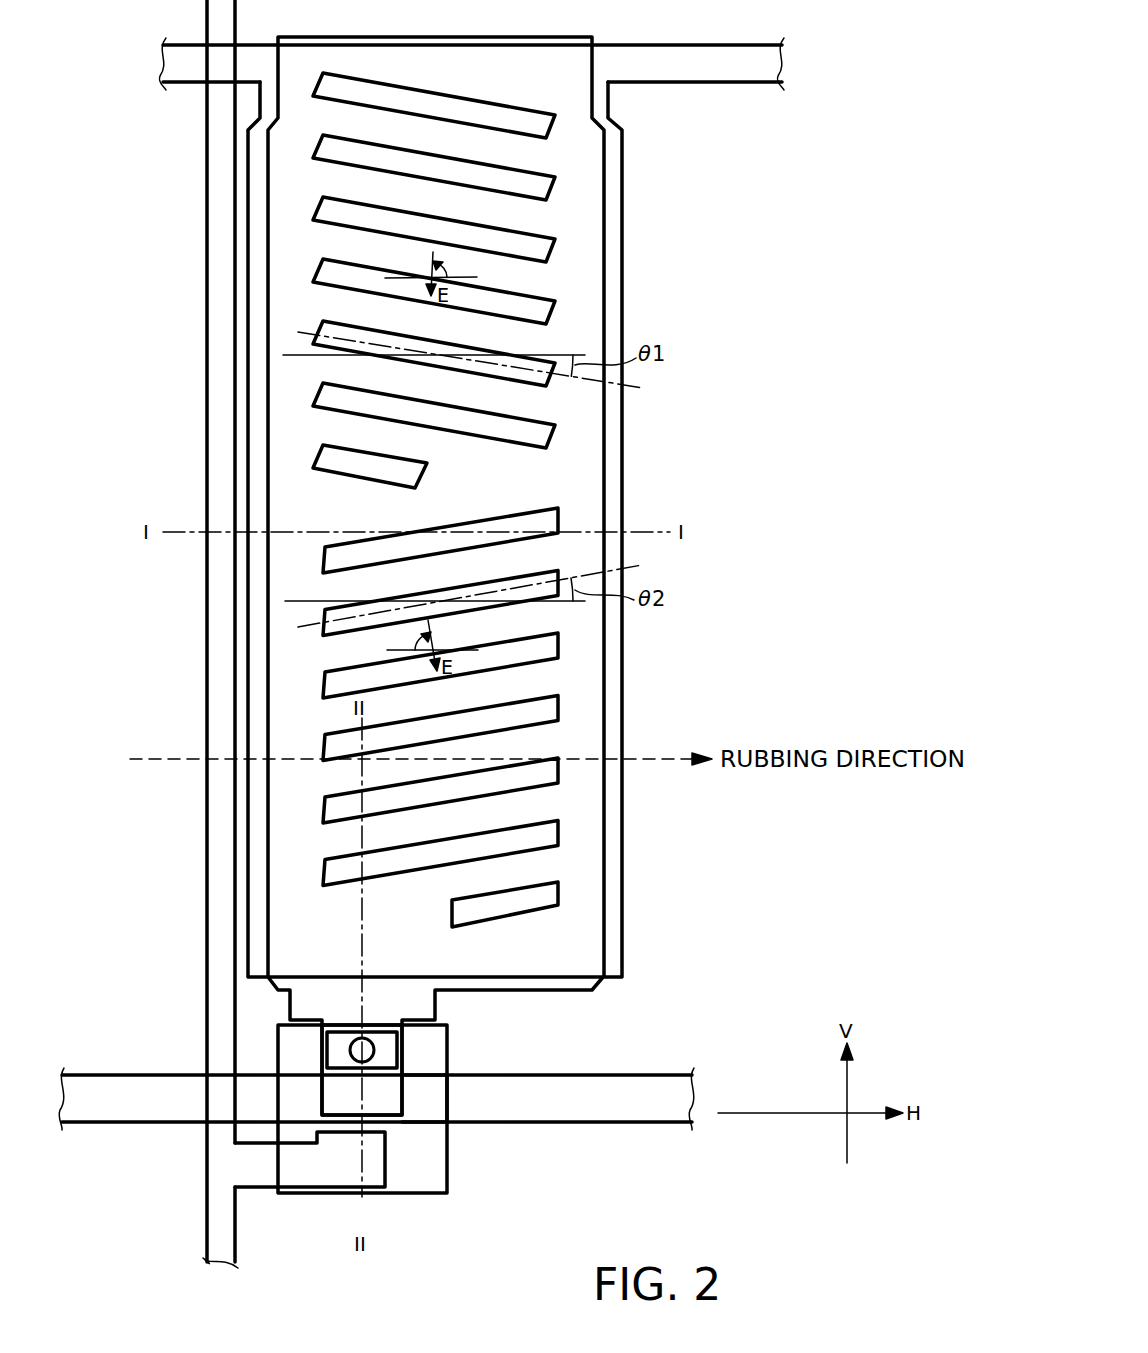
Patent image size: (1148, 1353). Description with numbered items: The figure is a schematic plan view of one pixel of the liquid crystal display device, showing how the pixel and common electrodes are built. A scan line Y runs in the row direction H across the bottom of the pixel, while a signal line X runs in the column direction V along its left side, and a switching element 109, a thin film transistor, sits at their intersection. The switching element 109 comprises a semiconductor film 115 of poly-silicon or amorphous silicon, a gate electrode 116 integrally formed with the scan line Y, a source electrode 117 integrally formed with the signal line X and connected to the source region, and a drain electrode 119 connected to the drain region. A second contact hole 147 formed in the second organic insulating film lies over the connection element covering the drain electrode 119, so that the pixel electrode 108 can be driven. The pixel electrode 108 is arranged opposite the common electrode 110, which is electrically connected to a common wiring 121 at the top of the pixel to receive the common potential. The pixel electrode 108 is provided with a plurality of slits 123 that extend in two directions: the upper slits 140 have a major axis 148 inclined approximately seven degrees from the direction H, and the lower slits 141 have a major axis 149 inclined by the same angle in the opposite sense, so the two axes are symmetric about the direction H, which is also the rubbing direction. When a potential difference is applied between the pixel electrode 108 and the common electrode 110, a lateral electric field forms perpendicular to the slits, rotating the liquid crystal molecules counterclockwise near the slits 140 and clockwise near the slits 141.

The pixel electrode 108 is at (606, 935).
The switching element 109 is at (375, 1208).
The common electrode 110 is at (623, 893).
The semiconductor film 115 is at (448, 1148).
The gate electrode 116 is at (433, 1097).
The source electrode 117 is at (297, 1190).
The drain electrode 119 is at (398, 1048).
The common wiring 121 is at (782, 64).
The slits 123 is at (543, 500).
The slits 140 is at (557, 430).
The slits 141 is at (557, 505).
The second contact hole 147 is at (350, 1050).
The major axis 148 is at (489, 367).
The major axis 149 is at (491, 588).
The signal line X is at (215, 1254).
The scan line Y is at (694, 1082).